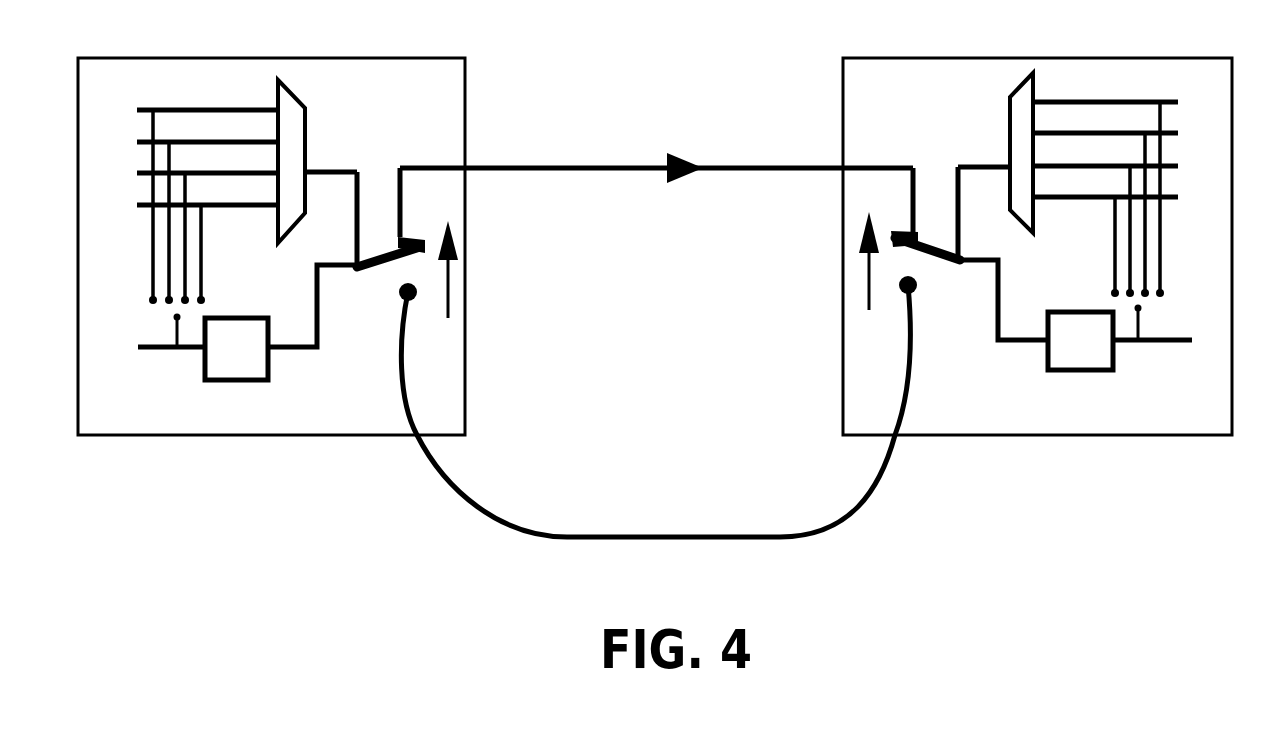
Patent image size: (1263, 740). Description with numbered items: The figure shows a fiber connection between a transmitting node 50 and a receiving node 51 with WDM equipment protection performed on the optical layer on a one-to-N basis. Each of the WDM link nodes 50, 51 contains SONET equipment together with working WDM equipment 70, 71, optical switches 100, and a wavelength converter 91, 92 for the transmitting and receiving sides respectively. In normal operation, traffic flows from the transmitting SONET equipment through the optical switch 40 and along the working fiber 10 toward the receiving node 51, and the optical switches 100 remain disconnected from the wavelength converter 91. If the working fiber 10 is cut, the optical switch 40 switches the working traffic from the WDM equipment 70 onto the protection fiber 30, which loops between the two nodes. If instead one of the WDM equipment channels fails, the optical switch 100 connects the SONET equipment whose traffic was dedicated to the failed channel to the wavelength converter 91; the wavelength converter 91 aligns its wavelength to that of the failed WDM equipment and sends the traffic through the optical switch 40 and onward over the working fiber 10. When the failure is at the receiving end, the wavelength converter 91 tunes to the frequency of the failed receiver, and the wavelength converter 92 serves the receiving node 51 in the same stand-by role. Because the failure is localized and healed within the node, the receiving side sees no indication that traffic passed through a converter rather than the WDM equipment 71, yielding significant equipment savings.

The working fiber 10 is at (656, 151).
The protection fiber 30 is at (658, 406).
The optical switch 40 is at (658, 242).
The transmitting node 50 is at (271, 247).
The receiving node 51 is at (1037, 246).
The working WDM equipment 70 is at (247, 156).
The working WDM equipment 71 is at (1068, 147).
The wavelength converter 91 is at (247, 322).
The wavelength converter 92 is at (1076, 315).
The optical switches 100 is at (661, 224).